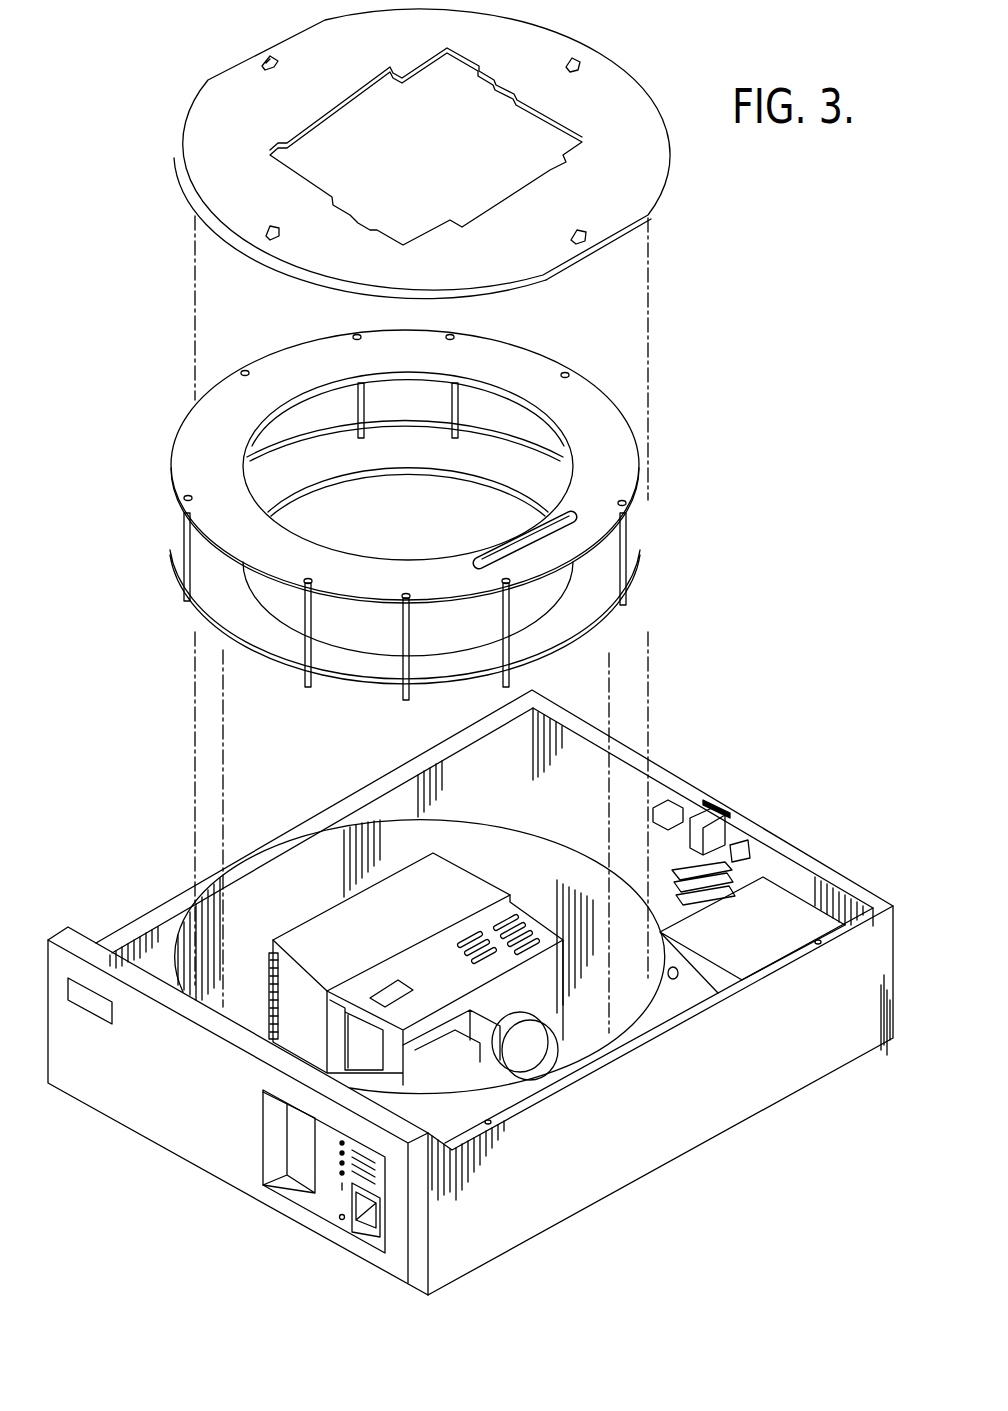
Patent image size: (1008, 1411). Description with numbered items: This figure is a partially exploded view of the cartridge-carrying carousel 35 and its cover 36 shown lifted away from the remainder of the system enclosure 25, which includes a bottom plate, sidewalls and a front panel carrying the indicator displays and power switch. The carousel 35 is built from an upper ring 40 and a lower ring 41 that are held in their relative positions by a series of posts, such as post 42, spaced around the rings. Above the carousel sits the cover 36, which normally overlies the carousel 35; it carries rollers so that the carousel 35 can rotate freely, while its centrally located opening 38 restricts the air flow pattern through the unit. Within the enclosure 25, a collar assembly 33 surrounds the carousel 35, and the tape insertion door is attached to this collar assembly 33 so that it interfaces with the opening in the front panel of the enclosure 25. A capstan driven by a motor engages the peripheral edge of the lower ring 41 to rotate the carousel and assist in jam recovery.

The system enclosure 25 is at (474, 992).
The collar assembly 33 is at (292, 863).
The carousel 35 is at (396, 515).
The cover 36 is at (382, 154).
The centrally located opening 38 is at (428, 155).
The upper ring 40 is at (196, 437).
The lower ring 41 is at (215, 615).
The post 42 is at (625, 568).